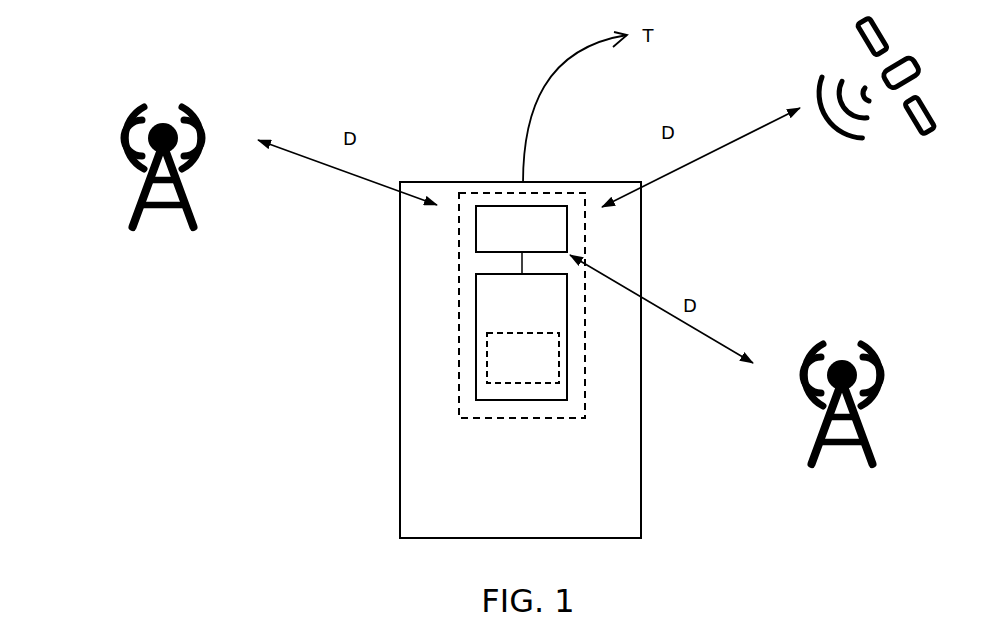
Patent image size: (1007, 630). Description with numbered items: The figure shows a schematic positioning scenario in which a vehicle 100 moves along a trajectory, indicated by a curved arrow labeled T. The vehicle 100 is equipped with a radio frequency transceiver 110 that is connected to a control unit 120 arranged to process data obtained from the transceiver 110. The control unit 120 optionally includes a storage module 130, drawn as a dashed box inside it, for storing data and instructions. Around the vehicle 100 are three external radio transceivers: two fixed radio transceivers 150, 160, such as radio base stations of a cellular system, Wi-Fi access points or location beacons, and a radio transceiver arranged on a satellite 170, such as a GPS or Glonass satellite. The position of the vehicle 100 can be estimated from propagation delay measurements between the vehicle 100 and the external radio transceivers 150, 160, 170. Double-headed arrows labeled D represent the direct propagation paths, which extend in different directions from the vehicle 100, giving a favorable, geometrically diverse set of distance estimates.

The vehicle 100 is at (500, 488).
The radio frequency transceiver 110 is at (503, 242).
The control unit 120 is at (503, 309).
The storage module 130 is at (503, 368).
The external radio transceiver 150 is at (133, 208).
The external radio transceiver 160 is at (808, 458).
The satellite 170 is at (918, 138).